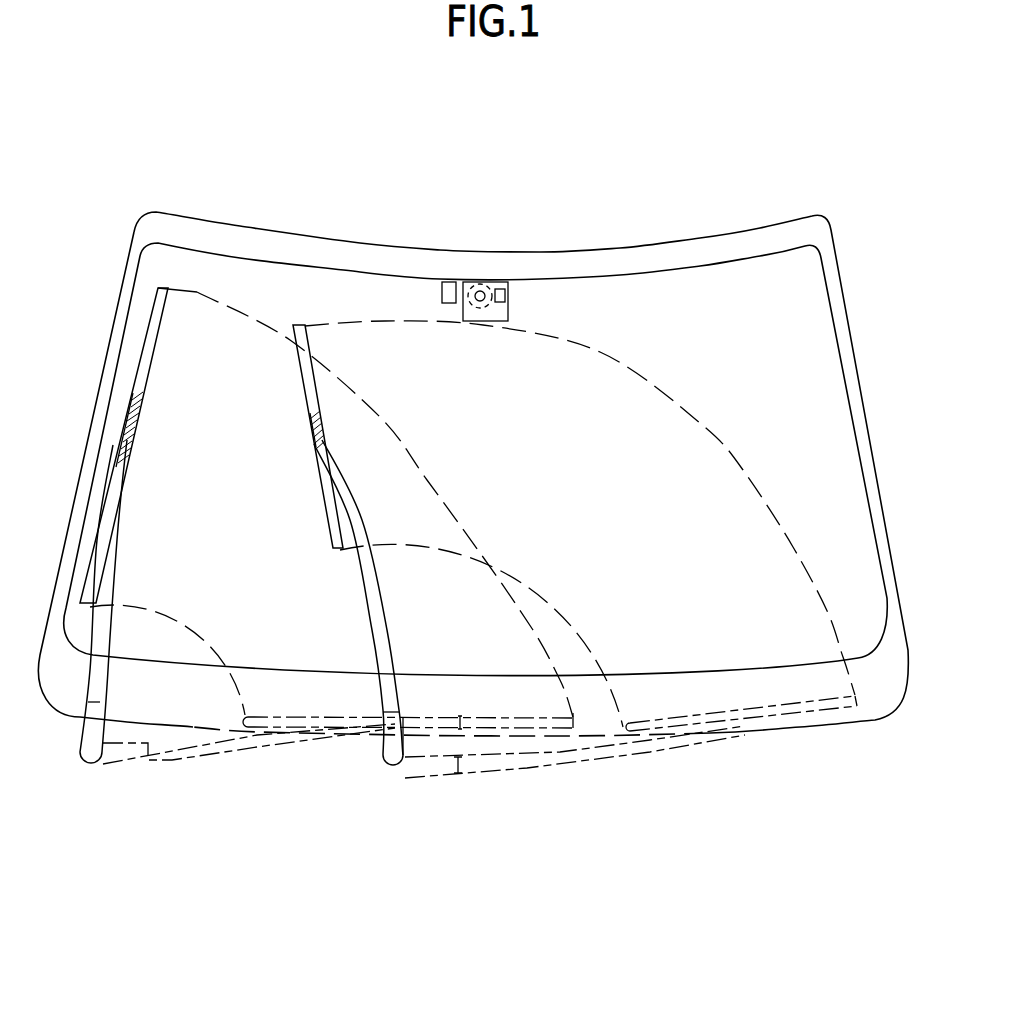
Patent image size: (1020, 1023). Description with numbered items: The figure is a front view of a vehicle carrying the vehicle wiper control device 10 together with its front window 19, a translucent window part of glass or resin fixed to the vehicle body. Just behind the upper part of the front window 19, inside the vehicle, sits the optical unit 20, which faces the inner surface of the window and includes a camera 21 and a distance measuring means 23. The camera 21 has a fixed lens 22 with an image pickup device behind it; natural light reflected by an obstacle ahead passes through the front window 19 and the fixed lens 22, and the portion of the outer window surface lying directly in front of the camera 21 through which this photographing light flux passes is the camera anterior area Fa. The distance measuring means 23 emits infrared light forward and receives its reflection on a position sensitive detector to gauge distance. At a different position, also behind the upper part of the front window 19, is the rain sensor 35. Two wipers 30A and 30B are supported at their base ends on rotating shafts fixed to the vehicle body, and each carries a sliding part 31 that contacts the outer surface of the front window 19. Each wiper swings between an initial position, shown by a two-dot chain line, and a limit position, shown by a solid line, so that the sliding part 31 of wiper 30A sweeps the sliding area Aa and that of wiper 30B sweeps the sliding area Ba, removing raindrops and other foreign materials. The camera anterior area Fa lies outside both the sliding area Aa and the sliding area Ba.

The vehicle wiper control device 10 is at (629, 222).
The front window 19 is at (818, 315).
The optical unit 20 is at (522, 306).
The camera 21 is at (480, 290).
The fixed lens 22 is at (480, 282).
The distance measuring means 23 is at (500, 283).
The rain sensor 35 is at (450, 283).
The sliding part 31 is at (153, 347).
The wiper 30A is at (398, 703).
The wiper 30B is at (124, 470).
The sliding area Aa is at (693, 427).
The sliding area Ba is at (192, 333).
The camera anterior area Fa is at (487, 288).